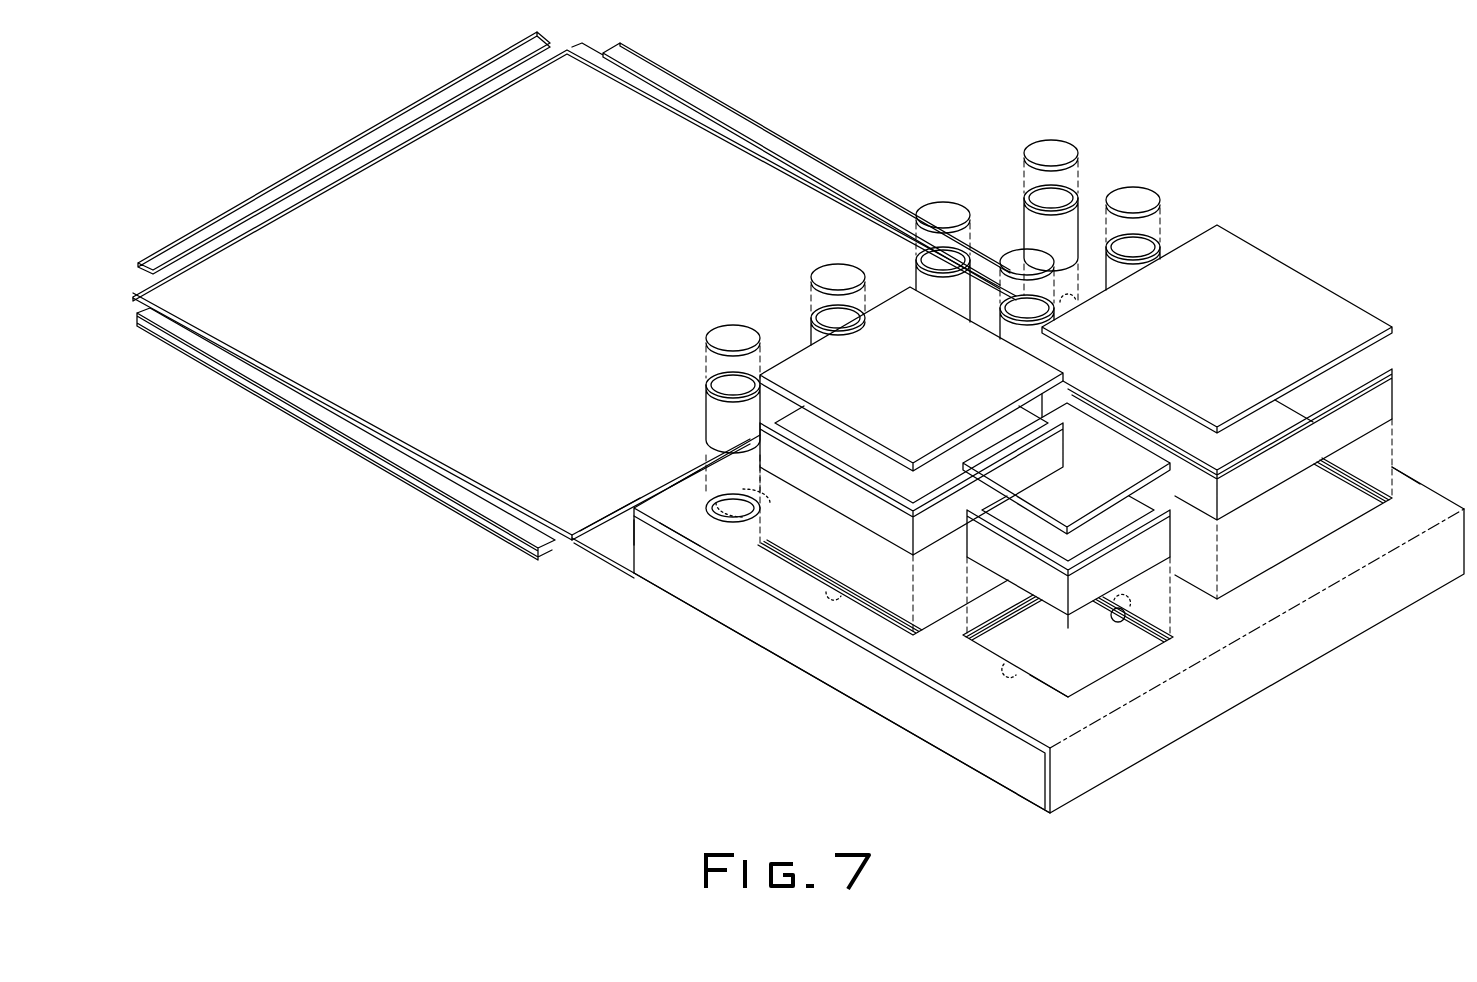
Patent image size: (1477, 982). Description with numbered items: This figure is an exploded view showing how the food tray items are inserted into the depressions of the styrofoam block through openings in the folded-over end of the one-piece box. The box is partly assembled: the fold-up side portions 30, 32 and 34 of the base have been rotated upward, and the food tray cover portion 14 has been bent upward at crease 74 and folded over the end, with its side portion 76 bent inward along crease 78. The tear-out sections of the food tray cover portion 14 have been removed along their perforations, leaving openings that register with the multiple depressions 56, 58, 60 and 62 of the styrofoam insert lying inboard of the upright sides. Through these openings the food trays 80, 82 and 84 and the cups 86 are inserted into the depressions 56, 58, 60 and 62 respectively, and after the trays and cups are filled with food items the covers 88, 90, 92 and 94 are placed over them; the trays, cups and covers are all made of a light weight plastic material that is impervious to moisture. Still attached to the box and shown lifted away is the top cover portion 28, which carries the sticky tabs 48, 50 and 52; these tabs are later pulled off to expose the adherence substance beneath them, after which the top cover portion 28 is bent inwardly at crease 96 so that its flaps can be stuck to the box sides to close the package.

The food tray cover portion 14 is at (1020, 705).
The top cover portion 28 is at (410, 306).
The side portion 30 is at (1137, 735).
The side portion 32 is at (856, 680).
The side portion 34 is at (590, 545).
The sticky tab 48 is at (247, 370).
The sticky tab 50 is at (303, 177).
The sticky tab 52 is at (772, 140).
The depression 56 is at (1077, 667).
The depression 58 is at (882, 594).
The depression 60 is at (1288, 528).
The depression 62 is at (692, 565).
The crease 74 is at (1233, 612).
The side portion 76 is at (640, 540).
The crease 78 is at (676, 505).
The food tray 80 is at (947, 590).
The food tray 82 is at (737, 515).
The food tray 84 is at (1378, 408).
The cups 86 is at (1068, 232).
The cover 88 is at (1075, 486).
The cover 90 is at (908, 416).
The cover 92 is at (1169, 346).
The cover 94 is at (1052, 145).
The crease 96 is at (603, 532).